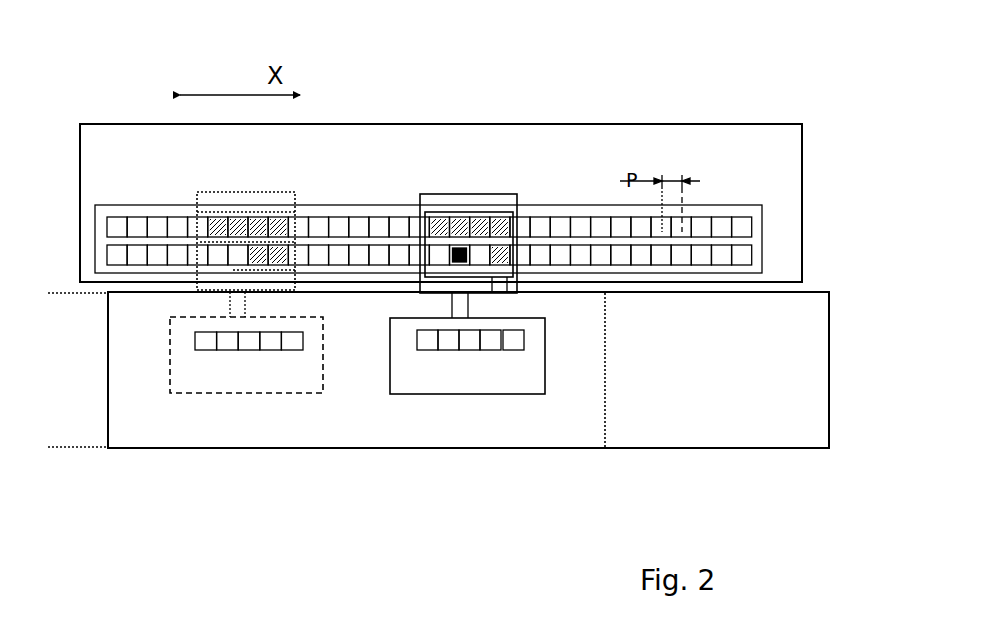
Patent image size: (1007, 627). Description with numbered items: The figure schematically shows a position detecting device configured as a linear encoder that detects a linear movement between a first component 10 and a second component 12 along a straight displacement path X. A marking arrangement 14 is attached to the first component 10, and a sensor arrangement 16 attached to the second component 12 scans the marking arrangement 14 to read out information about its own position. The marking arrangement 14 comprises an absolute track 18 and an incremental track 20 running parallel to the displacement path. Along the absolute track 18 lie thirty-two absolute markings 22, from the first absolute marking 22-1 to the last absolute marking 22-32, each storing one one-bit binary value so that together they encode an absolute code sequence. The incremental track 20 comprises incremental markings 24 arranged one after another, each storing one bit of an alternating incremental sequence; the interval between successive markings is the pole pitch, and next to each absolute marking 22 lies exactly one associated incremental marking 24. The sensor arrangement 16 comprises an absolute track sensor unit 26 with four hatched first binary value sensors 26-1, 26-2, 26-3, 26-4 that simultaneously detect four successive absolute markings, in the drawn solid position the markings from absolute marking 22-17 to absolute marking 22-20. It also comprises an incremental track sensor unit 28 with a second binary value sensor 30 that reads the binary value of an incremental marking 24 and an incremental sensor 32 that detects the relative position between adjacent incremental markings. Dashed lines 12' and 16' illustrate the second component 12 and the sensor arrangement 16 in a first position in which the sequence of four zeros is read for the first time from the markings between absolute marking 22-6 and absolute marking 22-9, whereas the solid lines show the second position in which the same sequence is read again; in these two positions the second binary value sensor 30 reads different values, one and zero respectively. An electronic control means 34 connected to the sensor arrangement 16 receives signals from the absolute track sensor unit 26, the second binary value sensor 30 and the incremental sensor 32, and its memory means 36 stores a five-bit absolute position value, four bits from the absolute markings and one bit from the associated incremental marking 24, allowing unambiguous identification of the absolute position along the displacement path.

The first component 10 is at (441, 177).
The second component 12 is at (454, 350).
The second component in first position 12' is at (650, 370).
The marking arrangement 14 is at (417, 174).
The sensor arrangement 16 is at (418, 313).
The sensor arrangement in first position 16' is at (222, 292).
The absolute track 18 is at (387, 225).
The incremental track 20 is at (397, 260).
The absolute marking 22 is at (155, 192).
The first absolute marking 22-1 is at (130, 199).
The sixth absolute marking 22-6 is at (234, 197).
The ninth absolute marking 22-9 is at (294, 197).
The seventeenth absolute marking 22-17 is at (401, 211).
The twentieth absolute marking 22-20 is at (545, 212).
The thirty-second absolute marking 22-32 is at (754, 204).
The incremental marking 24 is at (136, 291).
The absolute track sensor unit 26 is at (495, 206).
The first binary value sensor 26-1 is at (415, 200).
The first binary value sensor 26-2 is at (443, 188).
The first binary value sensor 26-3 is at (483, 200).
The first binary value sensor 26-4 is at (517, 188).
The incremental track sensor unit 28 is at (551, 302).
The second binary value sensor 30 is at (540, 319).
The incremental sensor 32 is at (413, 340).
The electronic control means 34 is at (467, 382).
The memory means 36 is at (470, 386).